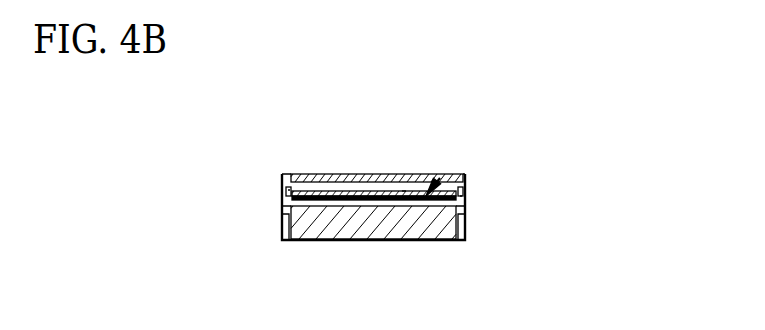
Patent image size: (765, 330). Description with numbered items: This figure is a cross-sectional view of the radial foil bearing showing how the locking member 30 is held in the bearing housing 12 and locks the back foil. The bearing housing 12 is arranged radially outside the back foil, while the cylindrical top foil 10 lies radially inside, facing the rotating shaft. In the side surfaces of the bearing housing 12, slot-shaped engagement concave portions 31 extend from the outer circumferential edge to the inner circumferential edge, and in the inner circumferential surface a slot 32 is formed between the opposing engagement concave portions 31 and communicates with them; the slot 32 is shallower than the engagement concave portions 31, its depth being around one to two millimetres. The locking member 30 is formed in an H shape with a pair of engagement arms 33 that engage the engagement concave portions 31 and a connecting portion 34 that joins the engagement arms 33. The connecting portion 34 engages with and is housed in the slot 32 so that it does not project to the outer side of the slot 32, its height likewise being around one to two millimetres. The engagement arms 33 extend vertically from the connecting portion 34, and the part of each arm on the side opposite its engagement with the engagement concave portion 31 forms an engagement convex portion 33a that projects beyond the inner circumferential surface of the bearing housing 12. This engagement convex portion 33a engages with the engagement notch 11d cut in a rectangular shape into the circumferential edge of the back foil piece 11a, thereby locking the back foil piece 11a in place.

The top foil 10 is at (357, 174).
The back foil piece 11a is at (404, 191).
The engagement notch 11d is at (289, 185).
The bearing housing 12 is at (336, 224).
The locking member 30 is at (440, 178).
The engagement concave portion 31 is at (287, 232).
The slot 32 is at (401, 200).
The engagement arm 33 is at (282, 206).
The engagement convex portion 33a is at (286, 190).
The connecting portion 34 is at (331, 195).